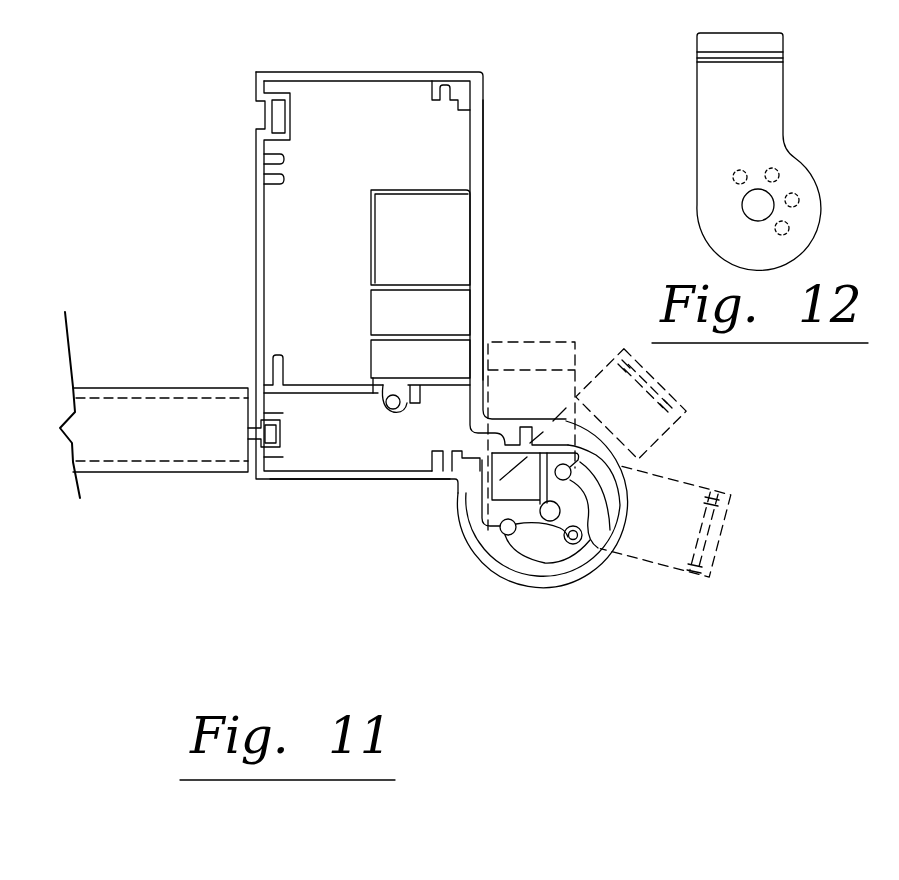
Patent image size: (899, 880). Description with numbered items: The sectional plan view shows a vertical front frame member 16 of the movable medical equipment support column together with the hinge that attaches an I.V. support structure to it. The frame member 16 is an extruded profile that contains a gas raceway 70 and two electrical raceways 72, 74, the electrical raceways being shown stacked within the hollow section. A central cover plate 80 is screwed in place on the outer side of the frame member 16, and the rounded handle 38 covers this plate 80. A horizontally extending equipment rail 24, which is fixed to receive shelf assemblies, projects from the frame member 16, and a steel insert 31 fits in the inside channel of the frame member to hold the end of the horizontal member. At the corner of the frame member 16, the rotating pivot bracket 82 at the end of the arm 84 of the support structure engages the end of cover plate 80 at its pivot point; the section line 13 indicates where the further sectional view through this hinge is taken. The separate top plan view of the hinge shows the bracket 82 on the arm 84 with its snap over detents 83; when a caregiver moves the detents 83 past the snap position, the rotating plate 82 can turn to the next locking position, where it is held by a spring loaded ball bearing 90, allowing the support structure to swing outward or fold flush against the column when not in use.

In FIG. 11, the gas raceway 70 is at (430, 138).
In FIG. 11, the central cover plate 80 is at (485, 180).
In FIG. 11, the front frame member 16 is at (388, 480).
In FIG. 11, the electrical raceway 72 is at (385, 318).
In FIG. 11, the electrical raceway 74 is at (395, 355).
In FIG. 11, the front horizontally extending equipment rail 24 is at (178, 386).
In FIG. 11, the steel insert 31 is at (255, 433).
In FIG. 11, the handle 38 is at (477, 540).
In FIG. 11, the spring loaded ball bearing 90 is at (578, 544).
In FIG. 11, the section line 13— 13 is at (455, 418).
In FIG. 12, the rotating pivot bracket 82 is at (802, 175).
In FIG. 12, the snap over detents 83 is at (793, 221).
In FIG. 12, the arm 84 is at (770, 90).